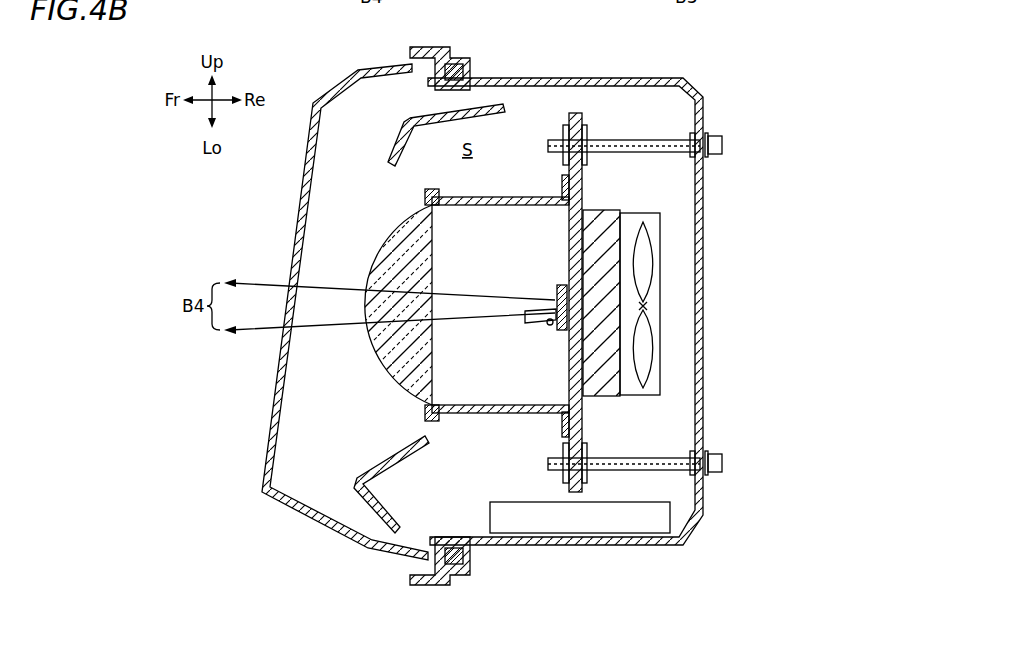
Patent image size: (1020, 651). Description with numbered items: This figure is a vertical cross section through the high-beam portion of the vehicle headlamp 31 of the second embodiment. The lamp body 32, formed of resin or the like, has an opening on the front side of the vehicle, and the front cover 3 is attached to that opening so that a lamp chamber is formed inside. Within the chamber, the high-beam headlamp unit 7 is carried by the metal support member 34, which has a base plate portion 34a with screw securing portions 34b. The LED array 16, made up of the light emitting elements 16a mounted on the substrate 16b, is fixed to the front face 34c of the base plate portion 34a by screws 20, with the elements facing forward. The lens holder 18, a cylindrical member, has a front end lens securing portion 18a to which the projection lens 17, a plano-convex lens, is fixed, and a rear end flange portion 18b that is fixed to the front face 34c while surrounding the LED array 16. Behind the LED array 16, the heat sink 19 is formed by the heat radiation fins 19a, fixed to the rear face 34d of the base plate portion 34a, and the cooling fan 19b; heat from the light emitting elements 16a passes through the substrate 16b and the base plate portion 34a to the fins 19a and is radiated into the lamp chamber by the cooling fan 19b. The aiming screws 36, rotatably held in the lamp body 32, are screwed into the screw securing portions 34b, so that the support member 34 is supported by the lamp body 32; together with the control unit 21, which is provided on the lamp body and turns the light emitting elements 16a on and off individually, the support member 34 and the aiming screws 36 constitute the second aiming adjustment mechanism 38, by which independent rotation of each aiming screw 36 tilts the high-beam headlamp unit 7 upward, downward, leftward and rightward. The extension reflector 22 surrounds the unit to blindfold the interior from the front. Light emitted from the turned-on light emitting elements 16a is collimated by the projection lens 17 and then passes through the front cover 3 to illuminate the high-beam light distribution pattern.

The front cover 3 is at (382, 548).
The high-beam headlamp unit 7 is at (512, 190).
The LED array 16 is at (682, 298).
The light emitting element 16a is at (556, 303).
The substrate 16b is at (612, 250).
The projection lens 17 is at (415, 400).
The lens holder 18 is at (478, 416).
The lens securing portion 18a is at (435, 420).
The flange portion 18b is at (570, 192).
The heat sink 19 is at (709, 305).
The heat radiation fins 19a is at (612, 328).
The cooling fan 19b is at (645, 357).
The screws 20 is at (556, 330).
The control unit 21 is at (665, 518).
The extension reflector 22 is at (400, 132).
The vehicle headlamp 31 is at (311, 36).
The lamp body 32 is at (618, 80).
The support member 34 is at (627, 331).
The base plate portion 34a is at (573, 484).
The screw securing portions 34b is at (590, 130).
The front face 34c is at (565, 437).
The rear face 34d is at (586, 414).
The aiming screws 36 is at (722, 146).
The second aiming adjustment mechanism 38 is at (760, 420).